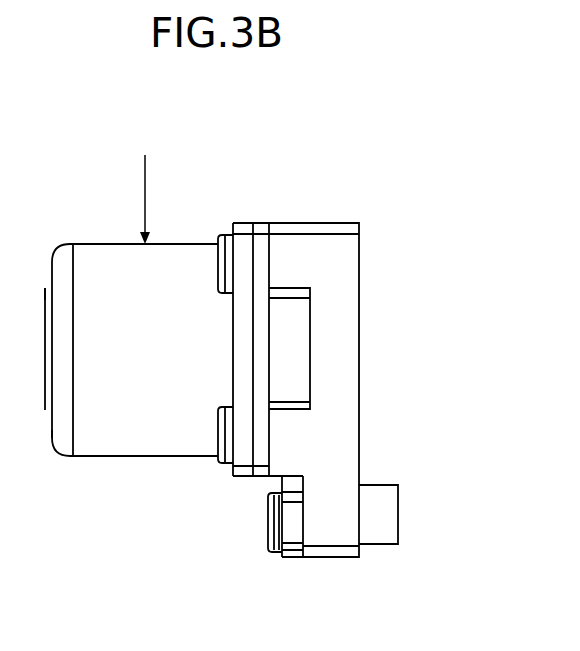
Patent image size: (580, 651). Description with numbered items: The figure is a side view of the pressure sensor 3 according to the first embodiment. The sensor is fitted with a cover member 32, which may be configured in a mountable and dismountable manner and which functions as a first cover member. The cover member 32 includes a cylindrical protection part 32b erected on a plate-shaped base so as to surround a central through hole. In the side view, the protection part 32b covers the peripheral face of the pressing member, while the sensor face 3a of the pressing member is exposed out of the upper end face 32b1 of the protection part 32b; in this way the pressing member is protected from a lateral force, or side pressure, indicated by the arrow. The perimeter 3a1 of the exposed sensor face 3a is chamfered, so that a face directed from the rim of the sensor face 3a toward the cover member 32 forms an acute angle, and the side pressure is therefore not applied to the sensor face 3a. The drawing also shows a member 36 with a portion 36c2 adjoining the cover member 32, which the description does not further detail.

The pressure sensor 3 is at (193, 185).
The cover member 32 is at (106, 237).
The protection part 32b is at (145, 430).
The upper end face 32b1 is at (47, 445).
The sensor face 3a is at (44, 410).
The perimeter 3a1 is at (45, 288).
The holding frame 36 is at (347, 351).
The protruding portion of holding frame 36c2 is at (3, 335).